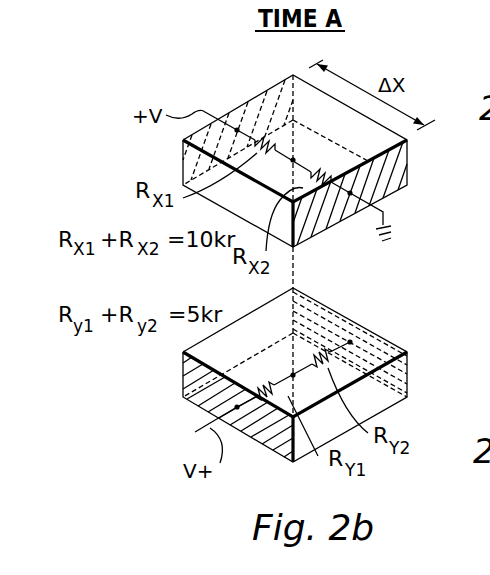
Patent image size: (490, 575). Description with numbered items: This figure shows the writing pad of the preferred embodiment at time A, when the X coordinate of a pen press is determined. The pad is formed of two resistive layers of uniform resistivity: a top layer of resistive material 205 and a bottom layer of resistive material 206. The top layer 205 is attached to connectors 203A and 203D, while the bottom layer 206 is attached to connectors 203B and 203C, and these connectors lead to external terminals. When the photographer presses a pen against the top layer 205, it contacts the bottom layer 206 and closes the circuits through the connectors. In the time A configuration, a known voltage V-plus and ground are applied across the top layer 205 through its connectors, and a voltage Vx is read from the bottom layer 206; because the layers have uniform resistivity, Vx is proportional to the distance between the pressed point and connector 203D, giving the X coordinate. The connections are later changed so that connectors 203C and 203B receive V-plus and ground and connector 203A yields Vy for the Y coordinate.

The top layer of resistive material 205 is at (398, 147).
The bottom layer of resistive material 206 is at (238, 347).
The connector 203A is at (388, 198).
The connector 203B is at (388, 345).
The connector 203C is at (210, 396).
The connector 203D is at (272, 104).